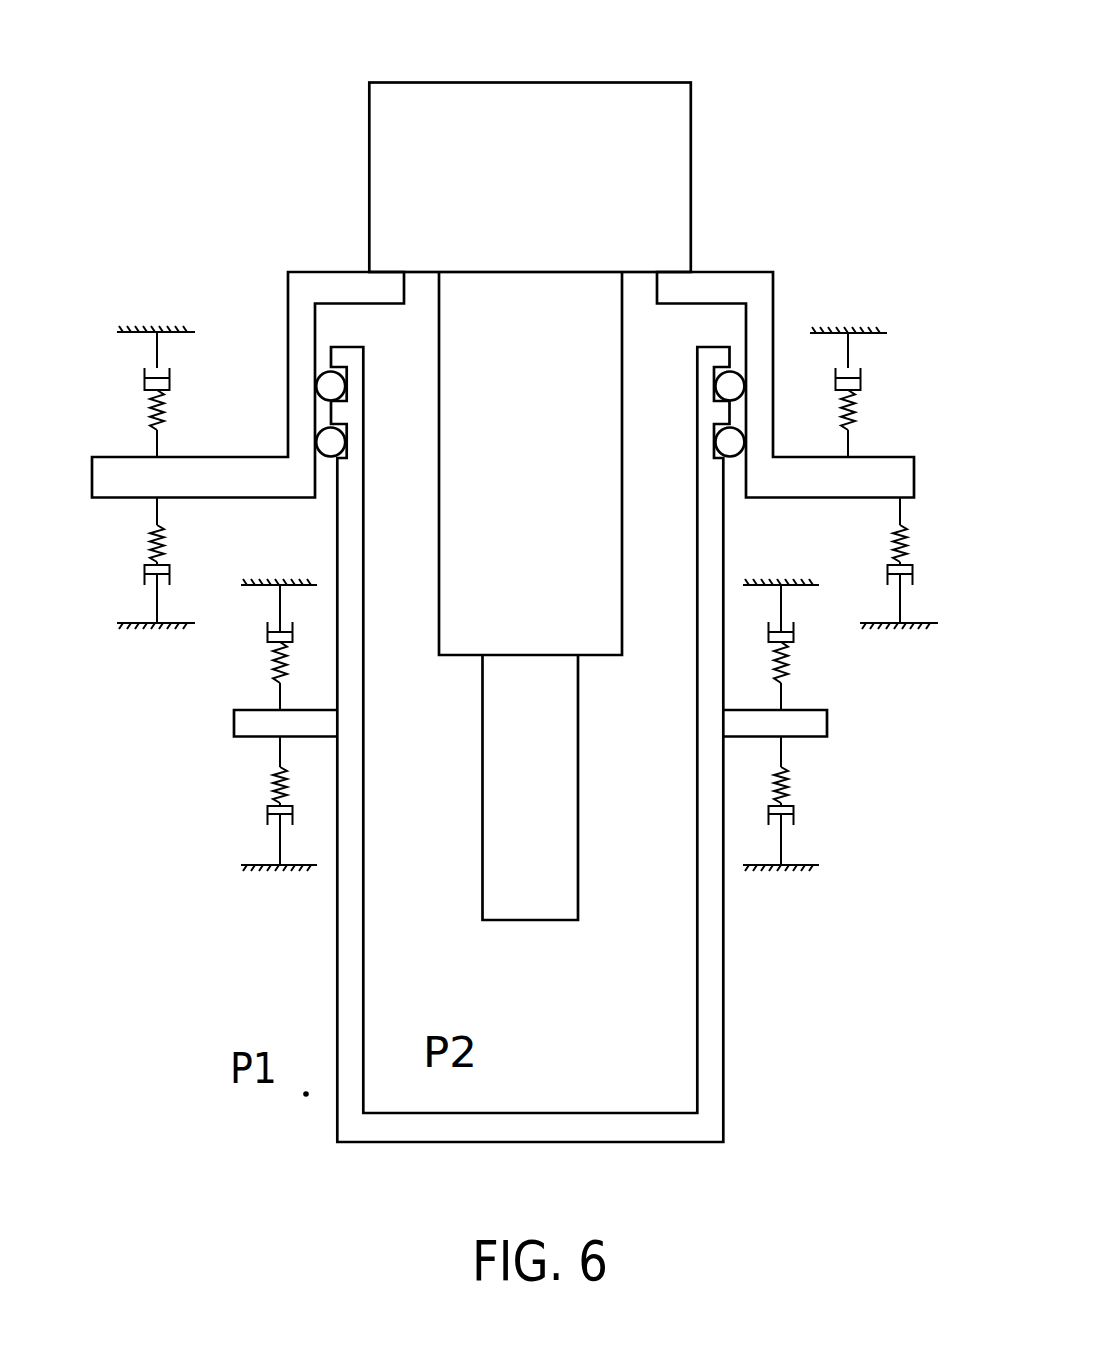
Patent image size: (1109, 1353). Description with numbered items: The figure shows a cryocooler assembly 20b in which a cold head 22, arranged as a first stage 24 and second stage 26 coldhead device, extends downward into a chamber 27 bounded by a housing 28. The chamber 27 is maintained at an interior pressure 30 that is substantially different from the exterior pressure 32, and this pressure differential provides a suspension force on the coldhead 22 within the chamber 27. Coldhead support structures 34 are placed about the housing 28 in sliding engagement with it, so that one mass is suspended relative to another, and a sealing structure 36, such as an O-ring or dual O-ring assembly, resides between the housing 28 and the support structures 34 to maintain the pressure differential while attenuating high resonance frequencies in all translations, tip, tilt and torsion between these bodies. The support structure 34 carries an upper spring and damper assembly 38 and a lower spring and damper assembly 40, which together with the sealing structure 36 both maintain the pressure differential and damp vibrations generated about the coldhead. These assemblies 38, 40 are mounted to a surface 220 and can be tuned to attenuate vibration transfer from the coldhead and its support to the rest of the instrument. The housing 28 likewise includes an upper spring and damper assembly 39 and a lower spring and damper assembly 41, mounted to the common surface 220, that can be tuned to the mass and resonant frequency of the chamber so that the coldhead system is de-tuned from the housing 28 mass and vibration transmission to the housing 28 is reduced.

The cryocooler assembly 20b is at (846, 119).
The cold head 22 is at (580, 113).
The first stage 24 is at (467, 614).
The second stage 26 is at (506, 807).
The chamber 27 is at (618, 1066).
The housing 28 is at (713, 983).
The interior pressure 30 is at (438, 1089).
The exterior pressure 32 is at (306, 1094).
The coldhead support structure 34 is at (291, 298).
The sealing structure 36 is at (332, 383).
The upper spring and damper assembly 38 is at (150, 415).
The upper spring and damper assembly 39 is at (271, 663).
The lower spring and damper assembly 40 is at (152, 552).
The lower spring and damper assembly 41 is at (273, 779).
The surface 220 is at (153, 328).